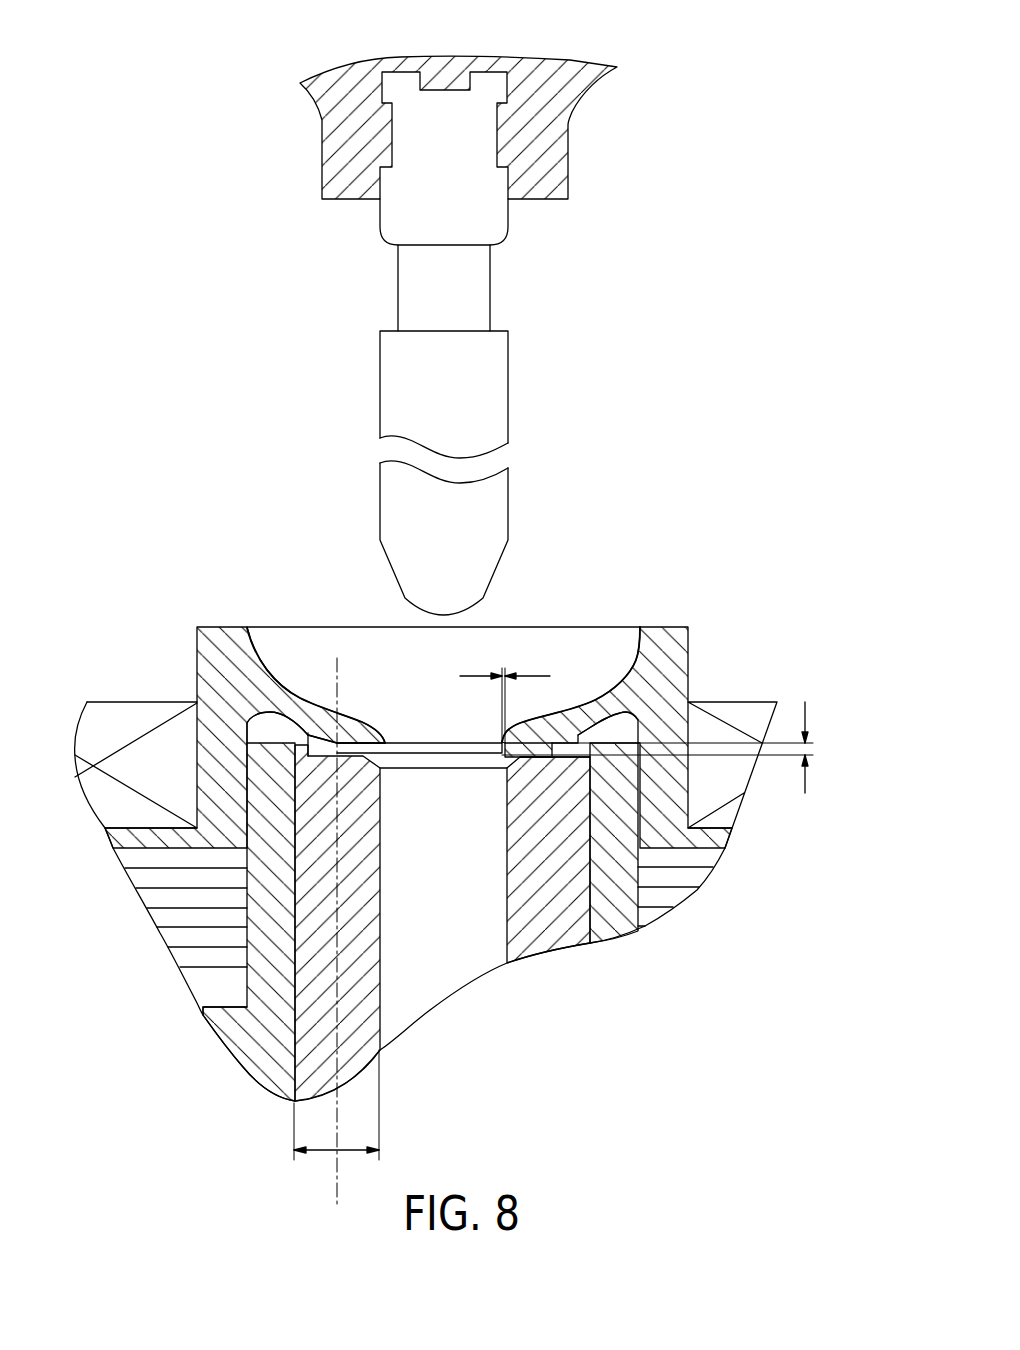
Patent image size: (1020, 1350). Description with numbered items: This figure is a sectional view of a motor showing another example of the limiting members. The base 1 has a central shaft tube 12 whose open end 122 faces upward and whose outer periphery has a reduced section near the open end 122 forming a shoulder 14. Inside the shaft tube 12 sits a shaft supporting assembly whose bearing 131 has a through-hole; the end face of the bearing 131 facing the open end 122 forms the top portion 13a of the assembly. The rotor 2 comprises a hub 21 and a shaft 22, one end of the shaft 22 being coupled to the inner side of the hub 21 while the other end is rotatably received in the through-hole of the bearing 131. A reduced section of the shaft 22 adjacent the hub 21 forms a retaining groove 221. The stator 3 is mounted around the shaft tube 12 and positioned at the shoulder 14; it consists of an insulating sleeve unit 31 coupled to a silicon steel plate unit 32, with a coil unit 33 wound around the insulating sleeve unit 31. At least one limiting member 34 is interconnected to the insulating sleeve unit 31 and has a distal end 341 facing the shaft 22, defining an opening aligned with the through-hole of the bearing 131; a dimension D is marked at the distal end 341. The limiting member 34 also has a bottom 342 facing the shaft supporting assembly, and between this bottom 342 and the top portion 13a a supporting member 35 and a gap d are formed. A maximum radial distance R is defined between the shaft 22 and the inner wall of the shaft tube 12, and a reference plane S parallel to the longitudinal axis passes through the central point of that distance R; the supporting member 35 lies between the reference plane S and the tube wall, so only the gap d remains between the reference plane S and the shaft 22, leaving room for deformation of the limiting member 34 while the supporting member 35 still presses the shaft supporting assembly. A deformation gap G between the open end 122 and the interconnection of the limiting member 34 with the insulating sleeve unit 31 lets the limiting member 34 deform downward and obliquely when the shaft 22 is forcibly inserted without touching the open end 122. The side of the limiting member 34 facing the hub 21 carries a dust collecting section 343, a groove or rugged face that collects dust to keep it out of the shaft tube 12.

The base 1 is at (400, 845).
The shaft tube 12 is at (250, 1052).
The top portion 13a is at (577, 753).
The bearing 131 is at (557, 935).
The open end 122 is at (538, 742).
The shoulder 14 is at (222, 1005).
The rotor 2 is at (498, 307).
The hub 21 is at (543, 83).
The shaft 22 is at (493, 387).
The retaining groove 221 is at (492, 289).
The stator 3 is at (428, 672).
The insulating sleeve unit 31 is at (201, 641).
The silicon steel plate unit 32 is at (150, 862).
The coil unit 33 is at (137, 710).
The limiting member 34 is at (293, 713).
The distal end 341 is at (385, 741).
The bottom 342 is at (378, 786).
The dust collecting section 343 is at (306, 702).
The supporting member 35 is at (318, 743).
The deformation gap G is at (251, 705).
The gap width D is at (505, 689).
The gap d is at (666, 747).
The maximum radial distance R is at (336, 1105).
The reference plane S is at (336, 1162).